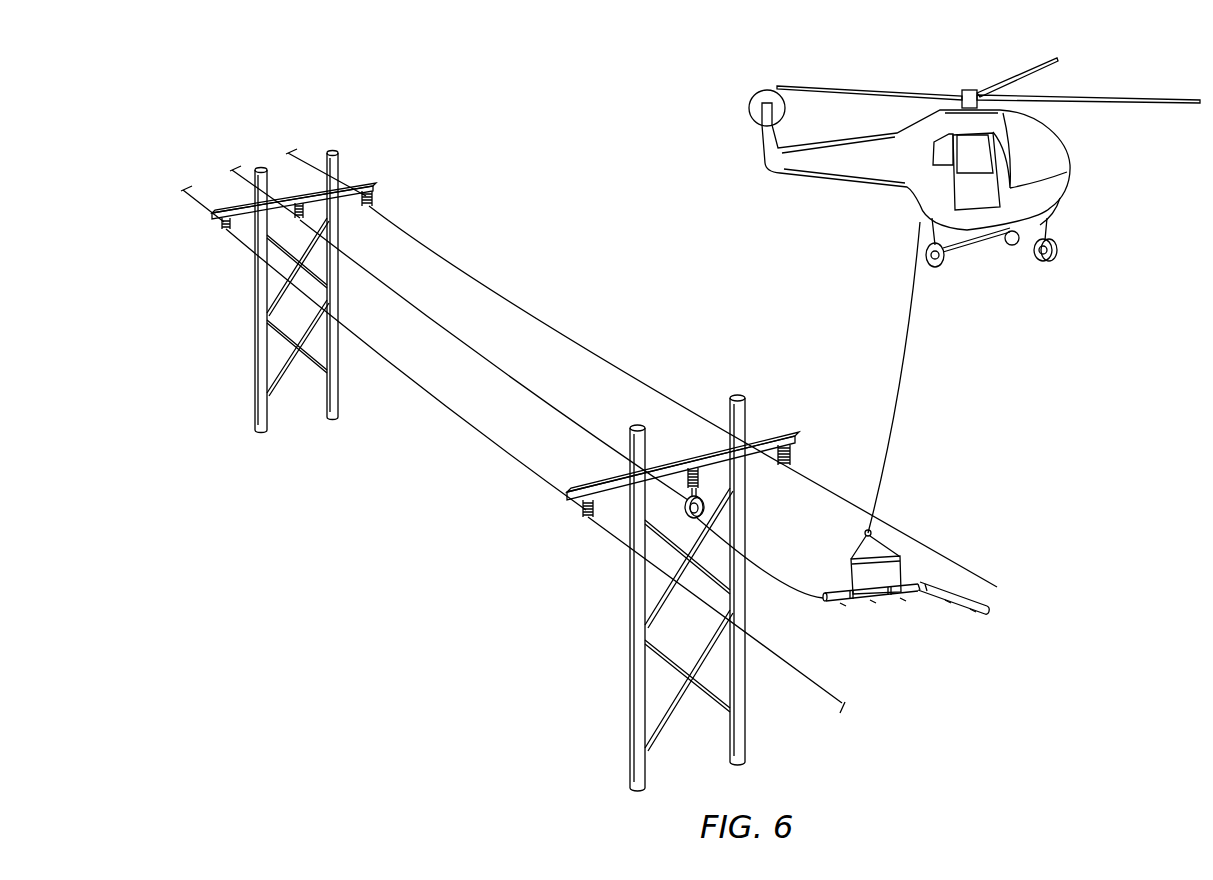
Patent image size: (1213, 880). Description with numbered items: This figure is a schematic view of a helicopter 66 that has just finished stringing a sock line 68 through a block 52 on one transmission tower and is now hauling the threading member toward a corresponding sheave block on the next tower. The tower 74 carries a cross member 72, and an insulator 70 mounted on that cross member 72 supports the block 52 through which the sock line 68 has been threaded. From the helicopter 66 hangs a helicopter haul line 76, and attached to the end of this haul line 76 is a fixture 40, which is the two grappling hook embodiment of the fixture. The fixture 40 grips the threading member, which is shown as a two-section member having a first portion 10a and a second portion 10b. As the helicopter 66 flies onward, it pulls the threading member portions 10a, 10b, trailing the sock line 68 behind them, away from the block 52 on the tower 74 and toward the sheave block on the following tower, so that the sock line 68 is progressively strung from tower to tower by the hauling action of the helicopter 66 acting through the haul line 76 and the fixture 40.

The helicopter 66 is at (842, 184).
The helicopter haul line 76 is at (903, 376).
The sock line 68 is at (487, 362).
The insulator 70 is at (686, 478).
The cross member 72 is at (765, 432).
The tower 74 is at (629, 620).
The block 52 is at (684, 520).
The fixture 40 is at (853, 578).
The threading member portion 10b is at (886, 600).
The threading member portion 10a is at (937, 602).